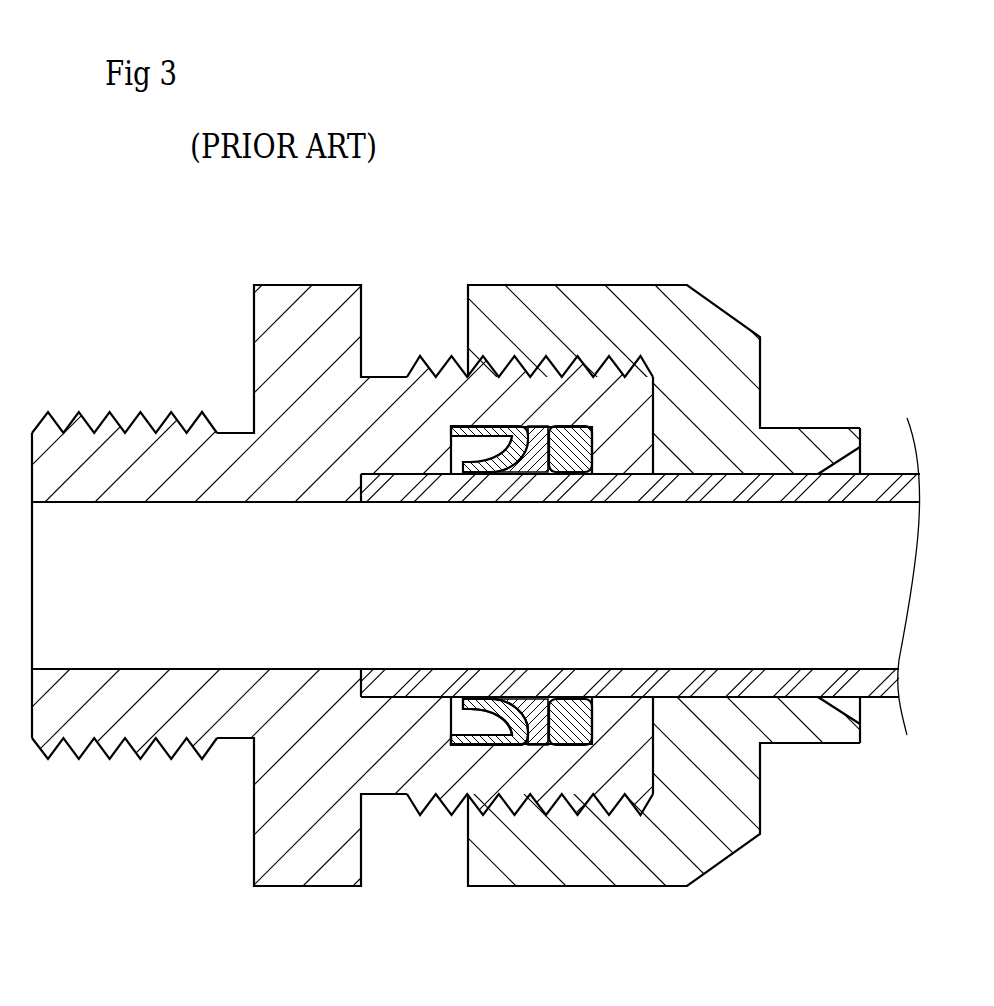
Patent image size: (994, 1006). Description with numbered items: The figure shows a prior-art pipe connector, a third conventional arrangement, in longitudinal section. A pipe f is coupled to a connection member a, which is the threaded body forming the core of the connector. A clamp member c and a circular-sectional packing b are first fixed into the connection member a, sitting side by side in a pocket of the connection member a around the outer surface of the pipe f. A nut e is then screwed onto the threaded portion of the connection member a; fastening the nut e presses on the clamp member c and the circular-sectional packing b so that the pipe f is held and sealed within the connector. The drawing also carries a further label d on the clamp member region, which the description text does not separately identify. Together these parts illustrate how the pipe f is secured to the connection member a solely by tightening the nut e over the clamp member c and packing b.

The connection member a is at (323, 306).
The circular-sectional packing b is at (573, 701).
The clamp member c is at (477, 702).
The seal lip d is at (468, 746).
The nut e is at (735, 387).
The pipe f is at (886, 698).